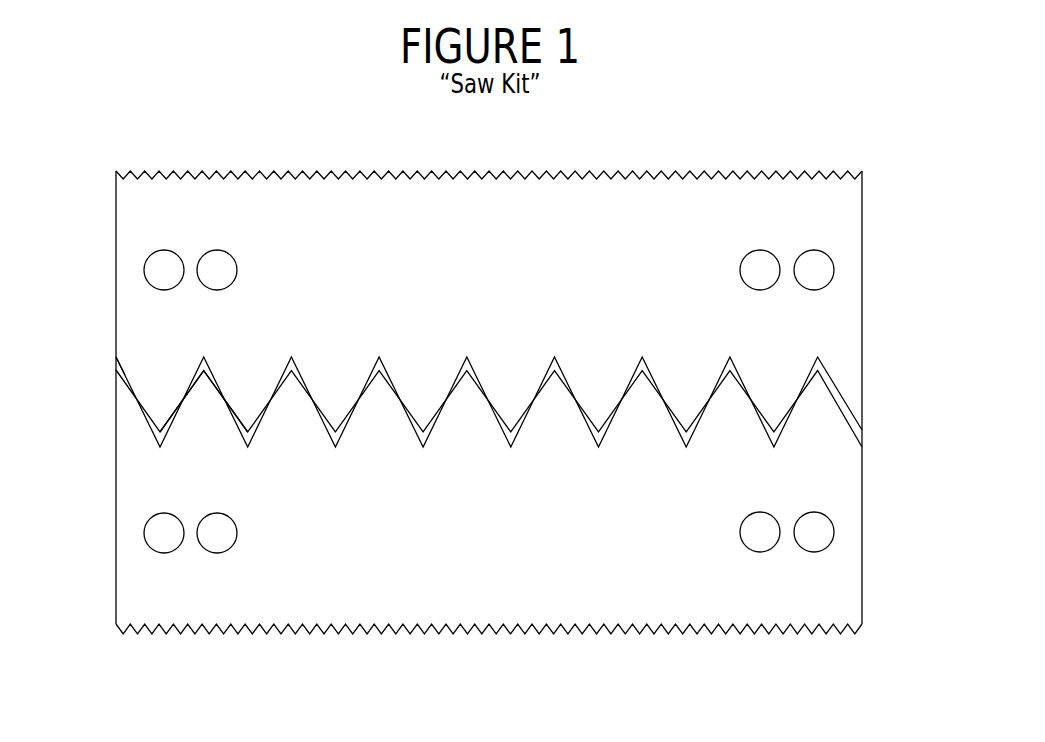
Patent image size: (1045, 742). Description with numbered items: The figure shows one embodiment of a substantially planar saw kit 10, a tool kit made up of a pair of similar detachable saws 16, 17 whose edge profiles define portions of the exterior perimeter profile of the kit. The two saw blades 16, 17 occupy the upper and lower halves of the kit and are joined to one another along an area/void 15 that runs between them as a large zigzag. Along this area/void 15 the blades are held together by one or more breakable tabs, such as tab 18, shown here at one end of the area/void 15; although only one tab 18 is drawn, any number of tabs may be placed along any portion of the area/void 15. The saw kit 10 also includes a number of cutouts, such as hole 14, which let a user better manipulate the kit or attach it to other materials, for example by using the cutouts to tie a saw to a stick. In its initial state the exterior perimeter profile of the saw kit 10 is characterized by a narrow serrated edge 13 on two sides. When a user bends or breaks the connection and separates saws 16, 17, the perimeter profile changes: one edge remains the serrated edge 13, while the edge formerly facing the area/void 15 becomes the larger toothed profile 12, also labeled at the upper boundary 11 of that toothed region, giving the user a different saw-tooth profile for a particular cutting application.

The saw kit 10 is at (835, 115).
The upper saw-tooth edge of saw blade 11 is at (859, 377).
The larger toothed profile 12 is at (835, 442).
The serrated edge 13 is at (834, 637).
The hole 14 is at (208, 542).
The area/void 15 is at (190, 375).
The saw 16 is at (332, 222).
The saw 17 is at (500, 551).
The tab 18 is at (101, 364).